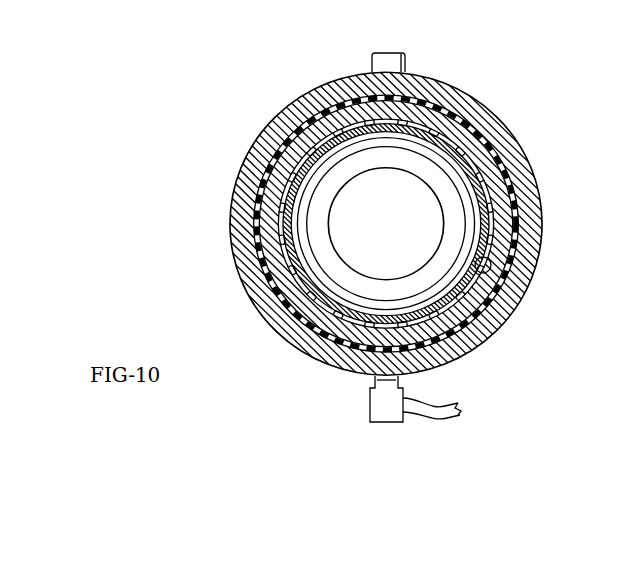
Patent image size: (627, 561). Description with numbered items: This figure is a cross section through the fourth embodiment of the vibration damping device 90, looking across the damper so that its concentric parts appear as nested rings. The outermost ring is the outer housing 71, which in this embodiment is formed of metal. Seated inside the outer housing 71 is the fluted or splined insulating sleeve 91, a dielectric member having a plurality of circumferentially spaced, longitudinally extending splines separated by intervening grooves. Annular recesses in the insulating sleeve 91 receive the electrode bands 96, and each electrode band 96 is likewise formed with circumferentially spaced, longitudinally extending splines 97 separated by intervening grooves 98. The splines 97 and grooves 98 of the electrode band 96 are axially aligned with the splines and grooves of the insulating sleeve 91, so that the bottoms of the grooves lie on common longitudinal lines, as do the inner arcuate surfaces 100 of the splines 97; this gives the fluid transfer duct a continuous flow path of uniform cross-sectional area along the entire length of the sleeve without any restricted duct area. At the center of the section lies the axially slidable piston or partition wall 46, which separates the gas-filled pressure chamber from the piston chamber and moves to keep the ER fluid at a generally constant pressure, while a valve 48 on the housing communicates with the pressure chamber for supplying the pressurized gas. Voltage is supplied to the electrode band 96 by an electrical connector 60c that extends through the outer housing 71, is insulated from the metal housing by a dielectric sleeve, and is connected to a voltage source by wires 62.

The piston or partition wall 46 is at (385, 224).
The valve 48 is at (378, 61).
The electrical connector 60c is at (370, 403).
The wires 62 is at (437, 412).
The outer housing 71 is at (313, 224).
The vibration damping device 90 is at (386, 223).
The insulating sleeve 91 is at (386, 223).
The electrode bands 96 is at (386, 224).
The splines 97 is at (313, 224).
The grooves 98 is at (350, 224).
The inner arcuate surfaces 100 is at (492, 270).